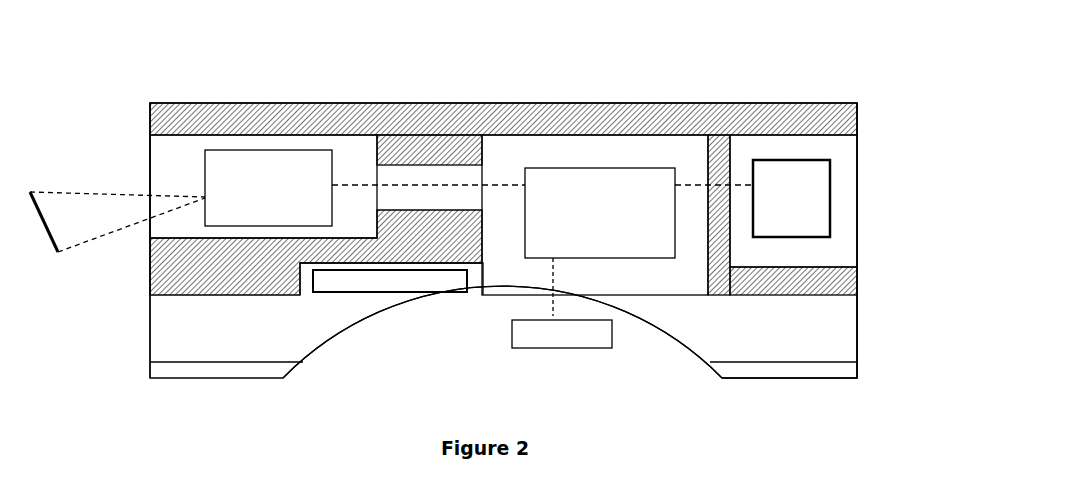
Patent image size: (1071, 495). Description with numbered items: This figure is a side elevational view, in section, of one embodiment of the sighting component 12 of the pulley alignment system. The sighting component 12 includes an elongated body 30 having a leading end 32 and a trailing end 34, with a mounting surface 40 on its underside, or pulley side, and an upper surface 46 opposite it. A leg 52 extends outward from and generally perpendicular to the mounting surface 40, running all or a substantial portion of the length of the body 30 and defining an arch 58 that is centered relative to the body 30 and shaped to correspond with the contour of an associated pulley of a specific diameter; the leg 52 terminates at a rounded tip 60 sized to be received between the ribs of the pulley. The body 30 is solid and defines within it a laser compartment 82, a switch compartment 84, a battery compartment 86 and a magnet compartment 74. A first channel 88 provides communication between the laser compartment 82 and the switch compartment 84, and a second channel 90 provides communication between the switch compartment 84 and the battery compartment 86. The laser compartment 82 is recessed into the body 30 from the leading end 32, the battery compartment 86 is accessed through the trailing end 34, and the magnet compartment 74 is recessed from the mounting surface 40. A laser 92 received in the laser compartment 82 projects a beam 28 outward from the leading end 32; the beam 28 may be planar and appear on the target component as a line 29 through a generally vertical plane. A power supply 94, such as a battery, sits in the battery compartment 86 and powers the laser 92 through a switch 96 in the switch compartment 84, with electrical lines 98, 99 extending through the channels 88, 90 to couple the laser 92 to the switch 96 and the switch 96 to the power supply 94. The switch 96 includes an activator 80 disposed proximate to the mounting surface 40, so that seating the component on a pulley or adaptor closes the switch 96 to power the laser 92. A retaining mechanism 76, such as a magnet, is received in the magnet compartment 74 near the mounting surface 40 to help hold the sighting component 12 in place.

The sighting component 12 is at (672, 75).
The beam 28 is at (85, 193).
The line 29 is at (48, 232).
The elongated body 30 is at (442, 130).
The leading end 32 is at (148, 115).
The trailing end 34 is at (857, 115).
The mounting surface 40 is at (198, 295).
The upper surface 46 is at (353, 104).
The leg 52 is at (822, 340).
The arch 58 is at (657, 332).
The rounded tip 60 is at (803, 368).
The magnet compartment 74 is at (478, 302).
The retaining mechanism 76 is at (403, 280).
The activator 80 is at (539, 332).
The laser compartment 82 is at (196, 136).
The switch compartment 84 is at (578, 138).
The battery compartment 86 is at (832, 137).
The first channel 88 is at (470, 168).
The second channel 90 is at (713, 165).
The laser 92 is at (303, 200).
The power supply 94 is at (822, 207).
The switch 96 is at (631, 248).
The electrical line 98 is at (440, 188).
The electrical line 99 is at (720, 186).